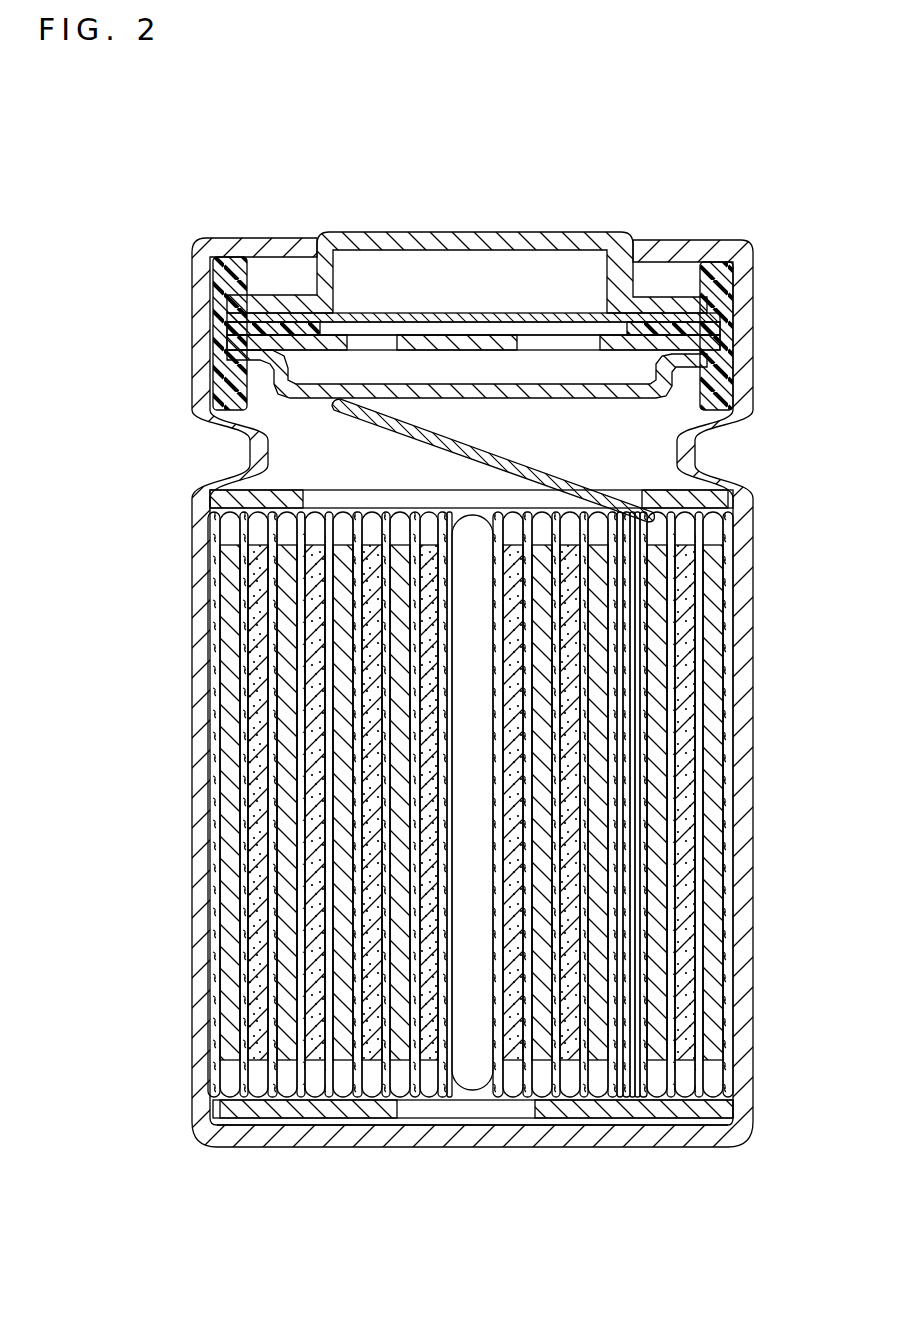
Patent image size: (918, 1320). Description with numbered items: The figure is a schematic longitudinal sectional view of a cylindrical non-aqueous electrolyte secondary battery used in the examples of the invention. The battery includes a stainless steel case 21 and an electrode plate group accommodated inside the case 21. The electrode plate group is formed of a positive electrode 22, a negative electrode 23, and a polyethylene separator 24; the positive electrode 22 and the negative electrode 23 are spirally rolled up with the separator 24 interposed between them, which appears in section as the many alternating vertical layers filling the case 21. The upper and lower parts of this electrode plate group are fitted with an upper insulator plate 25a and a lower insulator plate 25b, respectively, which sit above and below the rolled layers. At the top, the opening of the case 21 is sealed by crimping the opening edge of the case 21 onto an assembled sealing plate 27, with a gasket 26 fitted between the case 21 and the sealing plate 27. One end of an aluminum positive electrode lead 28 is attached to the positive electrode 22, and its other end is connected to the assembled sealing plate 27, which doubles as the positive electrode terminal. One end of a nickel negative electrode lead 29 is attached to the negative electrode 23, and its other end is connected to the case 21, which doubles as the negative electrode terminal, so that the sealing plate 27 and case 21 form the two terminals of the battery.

The case 21 is at (200, 665).
The positive electrode 22 is at (688, 898).
The negative electrode 23 is at (716, 844).
The separator 24 is at (737, 722).
The upper insulator plate 25a is at (718, 498).
The lower insulator plate 25b is at (718, 1108).
The gasket 26 is at (730, 320).
The assembled sealing plate 27 is at (395, 246).
The positive electrode lead 28 is at (527, 480).
The negative electrode lead 29 is at (522, 1130).